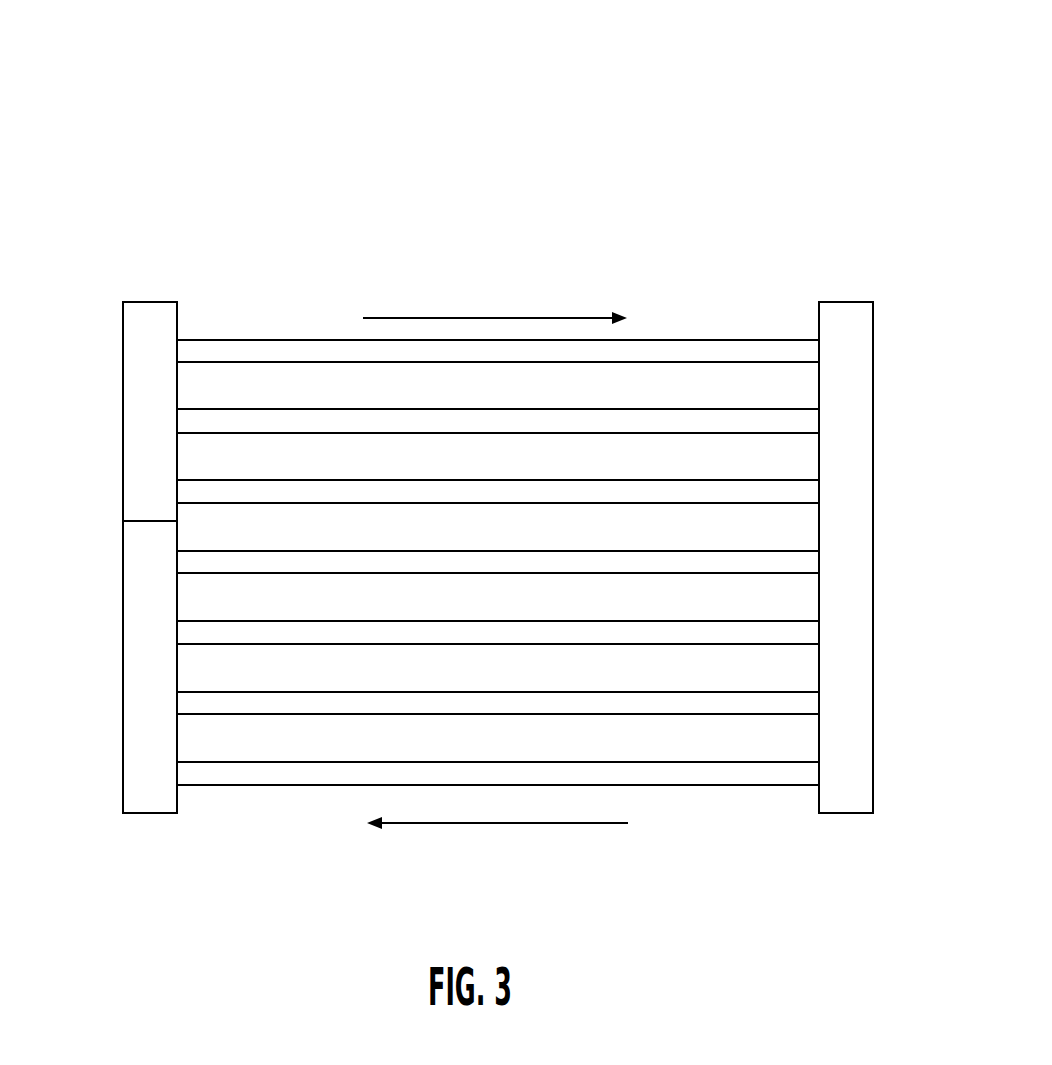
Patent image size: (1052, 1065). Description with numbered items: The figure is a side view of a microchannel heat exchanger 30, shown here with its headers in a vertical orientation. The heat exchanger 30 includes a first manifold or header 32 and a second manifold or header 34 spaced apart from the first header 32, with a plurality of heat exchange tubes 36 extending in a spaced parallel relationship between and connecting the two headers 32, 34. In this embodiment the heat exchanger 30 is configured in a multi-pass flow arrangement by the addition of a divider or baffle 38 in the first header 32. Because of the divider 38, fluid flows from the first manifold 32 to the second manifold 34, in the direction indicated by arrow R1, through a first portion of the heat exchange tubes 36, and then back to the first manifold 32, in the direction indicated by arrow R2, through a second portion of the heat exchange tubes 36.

The microchannel heat exchanger 30 is at (178, 158).
The first manifold or header 32 is at (123, 560).
The second manifold or header 34 is at (873, 526).
The heat exchange tubes 36 is at (301, 493).
The divider or baffle 38 is at (139, 521).
The first flow direction arrow R1 is at (495, 304).
The second flow direction arrow R2 is at (497, 843).